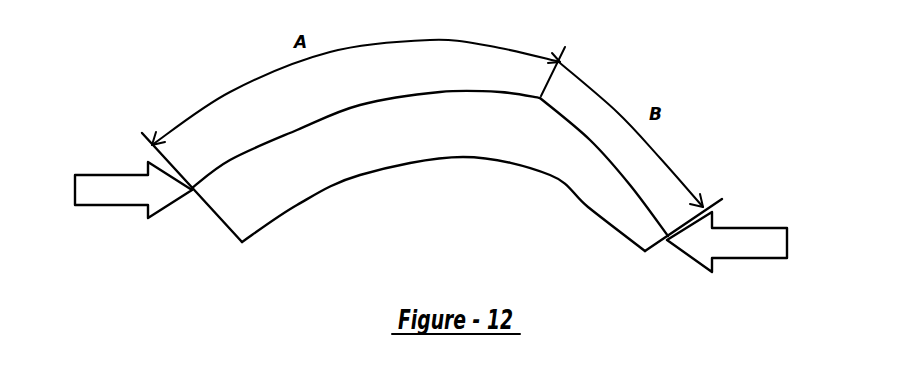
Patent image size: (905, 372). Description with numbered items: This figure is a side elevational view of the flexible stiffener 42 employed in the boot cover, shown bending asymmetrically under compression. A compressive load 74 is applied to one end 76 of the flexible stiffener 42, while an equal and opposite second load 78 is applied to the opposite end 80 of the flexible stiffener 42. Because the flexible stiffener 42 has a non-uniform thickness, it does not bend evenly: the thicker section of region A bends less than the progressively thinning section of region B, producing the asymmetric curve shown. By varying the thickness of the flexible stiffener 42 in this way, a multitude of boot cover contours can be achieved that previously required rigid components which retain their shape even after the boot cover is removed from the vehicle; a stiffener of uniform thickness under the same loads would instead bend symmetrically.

The flexible stiffener 42 is at (360, 175).
The compressive load 74 is at (110, 175).
The one end 76 is at (217, 215).
The second load 78 is at (758, 227).
The opposite end 80 is at (657, 245).